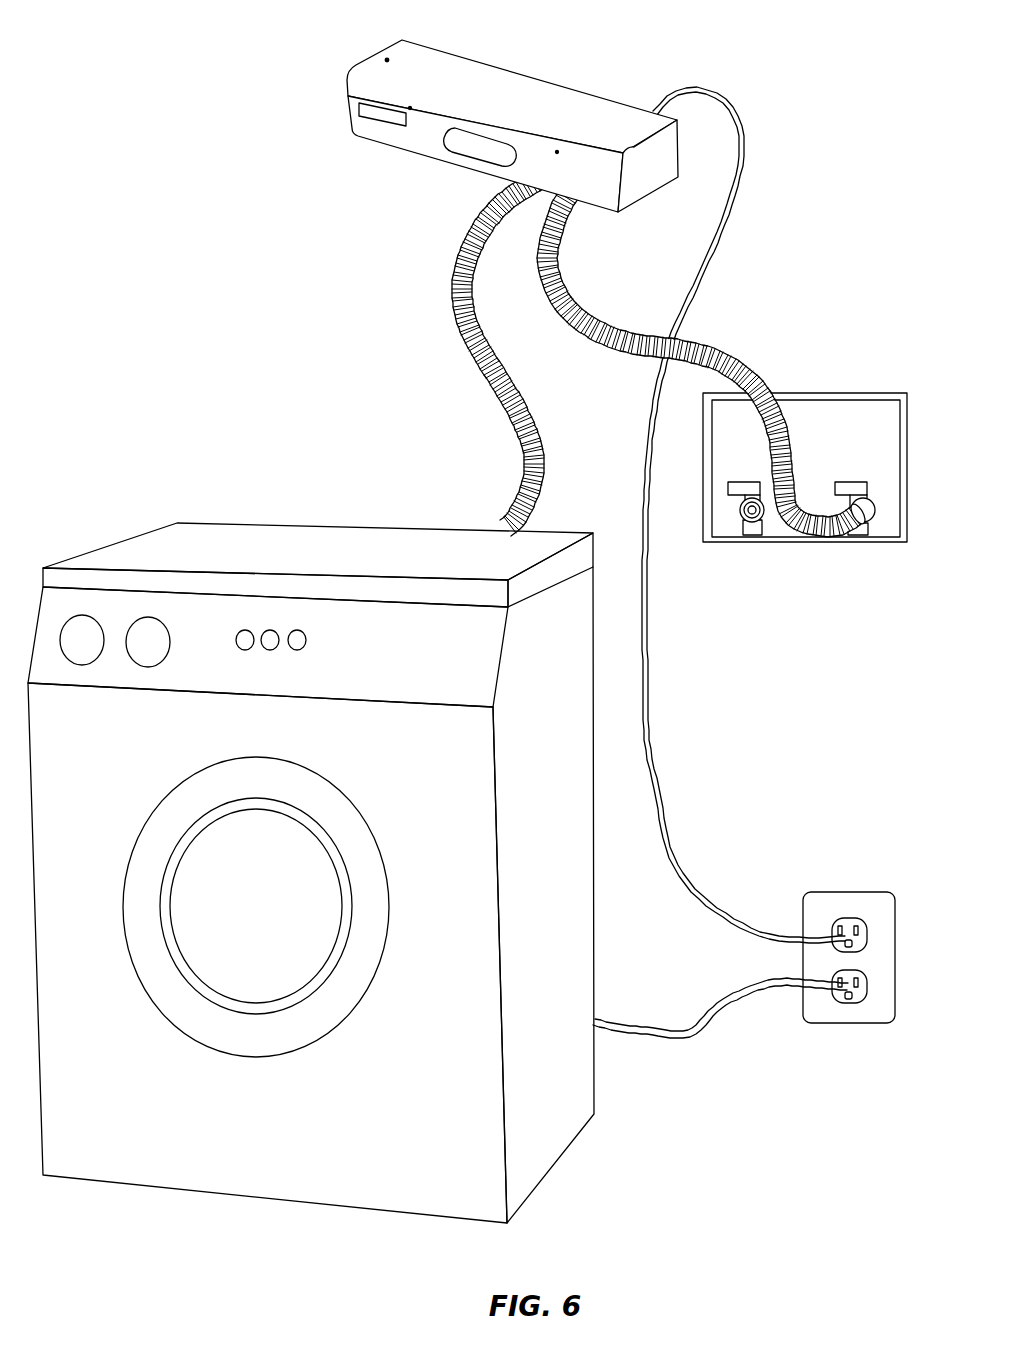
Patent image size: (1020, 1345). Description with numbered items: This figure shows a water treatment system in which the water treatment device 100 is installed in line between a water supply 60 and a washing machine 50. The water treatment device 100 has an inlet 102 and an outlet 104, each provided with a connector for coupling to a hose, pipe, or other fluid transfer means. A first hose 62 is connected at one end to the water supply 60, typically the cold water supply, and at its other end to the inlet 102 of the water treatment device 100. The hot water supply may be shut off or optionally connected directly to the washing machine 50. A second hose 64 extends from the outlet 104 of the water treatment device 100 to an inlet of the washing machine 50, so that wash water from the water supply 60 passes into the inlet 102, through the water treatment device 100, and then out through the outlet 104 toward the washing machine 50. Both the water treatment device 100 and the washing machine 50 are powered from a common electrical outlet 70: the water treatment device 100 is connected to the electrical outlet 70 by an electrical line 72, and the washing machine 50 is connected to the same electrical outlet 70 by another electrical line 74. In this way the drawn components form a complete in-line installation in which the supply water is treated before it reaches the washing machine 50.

The washing machine 50 is at (220, 545).
The water supply 60 is at (863, 393).
The first hose 62 is at (737, 352).
The second hose 64 is at (462, 292).
The electrical outlet 70 is at (880, 1017).
The electrical line 72 is at (657, 773).
The electrical line 74 is at (693, 1040).
The water treatment device 100 is at (380, 66).
The inlet 102 is at (607, 168).
The outlet 104 is at (552, 166).